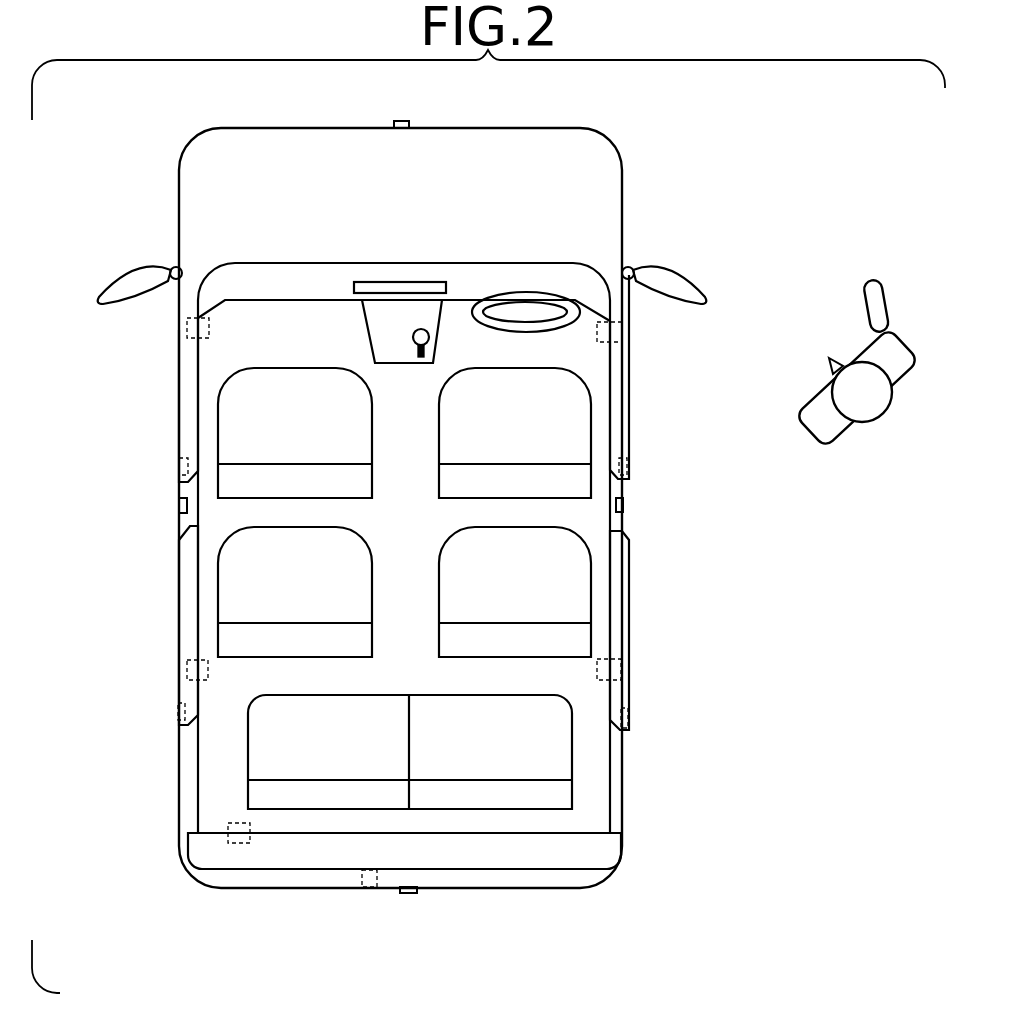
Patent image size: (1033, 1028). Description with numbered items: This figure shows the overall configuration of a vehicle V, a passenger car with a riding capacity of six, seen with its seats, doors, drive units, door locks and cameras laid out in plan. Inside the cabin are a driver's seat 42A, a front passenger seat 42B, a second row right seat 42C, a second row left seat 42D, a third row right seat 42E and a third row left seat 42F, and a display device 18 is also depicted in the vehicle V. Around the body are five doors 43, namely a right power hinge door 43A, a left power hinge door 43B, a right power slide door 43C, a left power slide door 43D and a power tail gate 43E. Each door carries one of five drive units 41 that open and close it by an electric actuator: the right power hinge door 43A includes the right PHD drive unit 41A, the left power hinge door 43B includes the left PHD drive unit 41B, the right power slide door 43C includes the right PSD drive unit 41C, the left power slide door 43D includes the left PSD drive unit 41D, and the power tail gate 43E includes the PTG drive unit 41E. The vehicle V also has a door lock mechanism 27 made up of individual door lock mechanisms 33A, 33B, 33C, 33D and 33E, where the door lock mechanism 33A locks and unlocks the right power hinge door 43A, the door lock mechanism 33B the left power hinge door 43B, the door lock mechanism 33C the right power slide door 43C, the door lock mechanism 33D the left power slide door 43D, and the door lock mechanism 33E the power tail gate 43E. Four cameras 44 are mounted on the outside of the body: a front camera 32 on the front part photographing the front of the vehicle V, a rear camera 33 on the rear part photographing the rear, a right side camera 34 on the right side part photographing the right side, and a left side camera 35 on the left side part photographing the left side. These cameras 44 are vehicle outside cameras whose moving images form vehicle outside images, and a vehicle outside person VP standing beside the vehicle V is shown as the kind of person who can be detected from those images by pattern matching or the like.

The vehicle V is at (623, 170).
The vehicle outside person VP is at (907, 337).
The display device 18 is at (423, 282).
The door lock mechanism 27 is at (408, 701).
The front camera 32 is at (404, 121).
The rear camera 33 is at (412, 893).
The right side camera 34 is at (623, 505).
The left side camera 35 is at (179, 505).
The cameras 44 is at (403, 528).
The drive units 41 is at (406, 631).
The right PHD drive unit 41A is at (622, 331).
The left PHD drive unit 41B is at (185, 328).
The right PSD drive unit 41C is at (622, 668).
The left PSD drive unit 41D is at (187, 670).
The PTG drive unit 41E is at (238, 843).
The door lock mechanism 33A is at (627, 463).
The door lock mechanism 33B is at (178, 465).
The door lock mechanism 33C is at (627, 710).
The door lock mechanism 33D is at (178, 710).
The door lock mechanism 33E is at (370, 887).
The driver's seat 42A is at (437, 418).
The front passenger seat 42B is at (372, 477).
The second row right seat 42C is at (437, 548).
The second row left seat 42D is at (372, 608).
The third row right seat 42E is at (485, 694).
The third row left seat 42F is at (307, 694).
The doors 43 is at (406, 605).
The right power hinge door 43A is at (630, 385).
The left power hinge door 43B is at (178, 375).
The right power slide door 43C is at (630, 592).
The left power slide door 43D is at (179, 580).
The power tail gate 43E is at (490, 870).